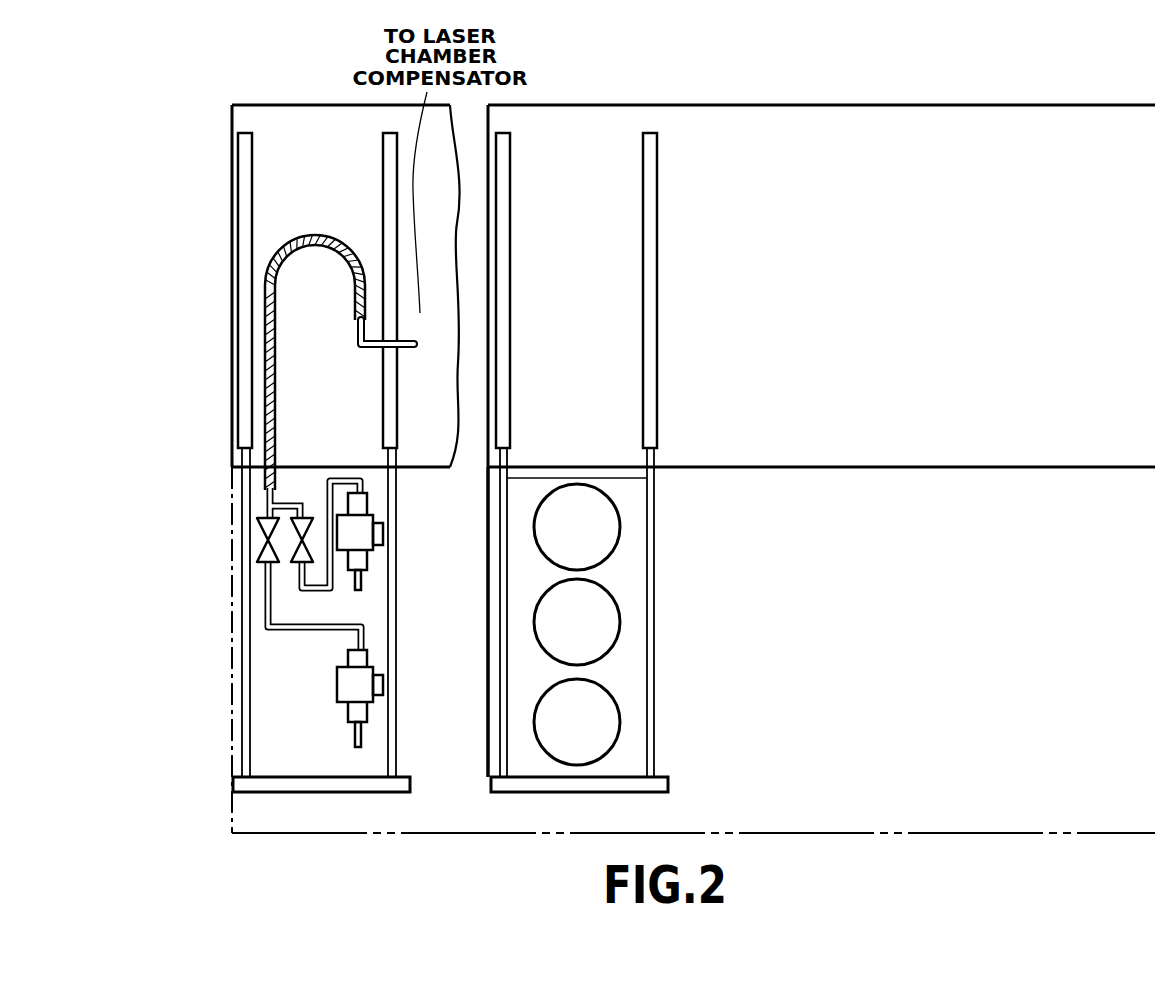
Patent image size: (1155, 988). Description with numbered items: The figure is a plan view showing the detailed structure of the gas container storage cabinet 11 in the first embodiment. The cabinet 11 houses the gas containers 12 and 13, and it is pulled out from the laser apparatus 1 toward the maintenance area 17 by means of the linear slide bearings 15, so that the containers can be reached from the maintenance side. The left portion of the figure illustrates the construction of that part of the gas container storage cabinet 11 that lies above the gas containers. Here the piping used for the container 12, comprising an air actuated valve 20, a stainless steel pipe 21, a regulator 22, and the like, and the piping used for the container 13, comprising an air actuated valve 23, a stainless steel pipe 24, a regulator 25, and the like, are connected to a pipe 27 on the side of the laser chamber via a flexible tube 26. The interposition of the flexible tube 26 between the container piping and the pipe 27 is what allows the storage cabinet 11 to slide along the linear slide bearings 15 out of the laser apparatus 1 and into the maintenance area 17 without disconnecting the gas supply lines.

The laser apparatus 1 is at (993, 118).
The gas container storage cabinet 11 is at (650, 633).
The gas container 12 is at (614, 556).
The gas container 13 is at (618, 718).
The linear slide bearings 15 is at (245, 482).
The maintenance area 17 is at (890, 755).
The air actuated valve 20 is at (300, 558).
The stainless steel pipe 21 is at (320, 588).
The regulator 22 is at (366, 503).
The air actuated valve 23 is at (262, 532).
The stainless steel pipe 24 is at (292, 633).
The regulator 25 is at (362, 713).
The flexible tube 26 is at (316, 236).
The pipe 27 is at (407, 350).